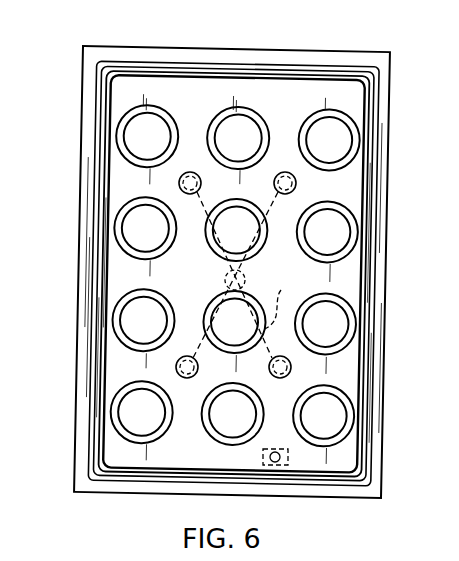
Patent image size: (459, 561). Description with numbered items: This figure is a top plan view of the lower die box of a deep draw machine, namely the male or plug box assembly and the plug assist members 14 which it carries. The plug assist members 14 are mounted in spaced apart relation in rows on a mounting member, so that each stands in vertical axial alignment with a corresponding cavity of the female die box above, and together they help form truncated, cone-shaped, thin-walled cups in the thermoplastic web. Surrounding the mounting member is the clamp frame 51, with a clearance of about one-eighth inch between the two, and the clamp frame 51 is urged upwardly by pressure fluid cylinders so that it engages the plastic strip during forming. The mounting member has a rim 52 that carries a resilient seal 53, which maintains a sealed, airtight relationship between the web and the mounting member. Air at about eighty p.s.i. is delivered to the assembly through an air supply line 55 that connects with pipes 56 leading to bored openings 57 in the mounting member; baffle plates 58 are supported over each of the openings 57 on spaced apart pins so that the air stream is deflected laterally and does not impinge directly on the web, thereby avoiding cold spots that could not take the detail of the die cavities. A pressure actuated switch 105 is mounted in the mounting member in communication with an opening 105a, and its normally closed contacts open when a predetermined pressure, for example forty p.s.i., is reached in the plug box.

The plug assist members 14 is at (125, 333).
The clamp frame 51 is at (384, 163).
The rim 52 is at (377, 222).
The resilient seal 53 is at (377, 70).
The air supply line 55 is at (224, 281).
The pipes 56 is at (279, 287).
The bored openings 57 is at (179, 183).
The baffle plates 58 is at (201, 183).
The pressure actuated switch 105 is at (288, 468).
The opening 105a is at (273, 462).